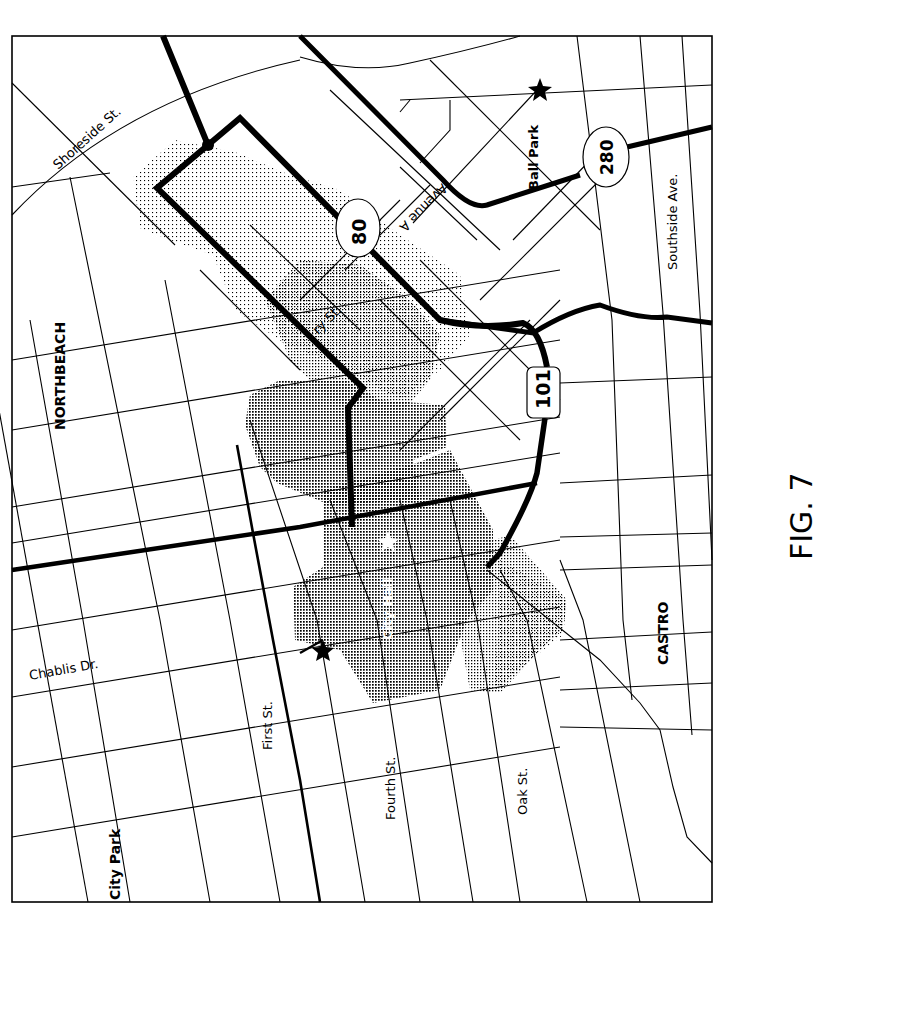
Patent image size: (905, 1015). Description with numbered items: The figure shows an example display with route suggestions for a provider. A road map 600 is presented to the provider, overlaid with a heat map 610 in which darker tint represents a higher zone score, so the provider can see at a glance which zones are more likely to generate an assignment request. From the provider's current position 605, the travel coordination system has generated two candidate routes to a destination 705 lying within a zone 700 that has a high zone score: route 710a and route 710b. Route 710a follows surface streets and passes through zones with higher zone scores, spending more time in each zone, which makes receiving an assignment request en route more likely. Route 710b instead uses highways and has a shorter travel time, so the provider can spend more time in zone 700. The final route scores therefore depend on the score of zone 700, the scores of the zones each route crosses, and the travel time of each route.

The road map 600 is at (322, 904).
The provider's current position 605 is at (210, 158).
The heat map 610 is at (324, 639).
The zone 700 is at (314, 495).
The destination 705 is at (320, 516).
The route 710a is at (201, 246).
The route 710b is at (272, 149).